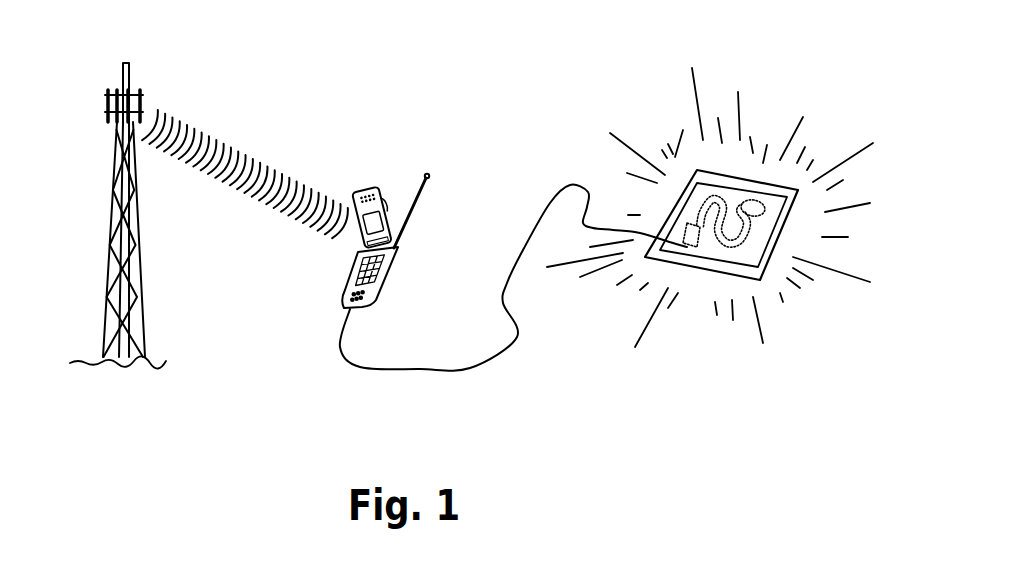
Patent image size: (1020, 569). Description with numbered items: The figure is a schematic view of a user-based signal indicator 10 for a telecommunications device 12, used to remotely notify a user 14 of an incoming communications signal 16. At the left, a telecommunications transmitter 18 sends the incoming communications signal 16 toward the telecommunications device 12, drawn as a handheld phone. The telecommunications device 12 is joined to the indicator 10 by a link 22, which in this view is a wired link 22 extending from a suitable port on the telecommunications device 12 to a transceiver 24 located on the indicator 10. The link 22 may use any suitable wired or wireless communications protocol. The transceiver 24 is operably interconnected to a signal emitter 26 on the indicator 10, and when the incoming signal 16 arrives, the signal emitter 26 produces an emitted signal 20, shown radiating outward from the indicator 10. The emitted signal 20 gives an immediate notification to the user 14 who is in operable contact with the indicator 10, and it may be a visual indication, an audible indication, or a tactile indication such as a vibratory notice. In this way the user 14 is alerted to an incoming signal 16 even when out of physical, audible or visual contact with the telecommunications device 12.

The user-based signal indicator 10 is at (666, 208).
The telecommunications device 12 is at (370, 188).
The user 14 is at (870, 350).
The incoming communications signal 16 is at (221, 142).
The telecommunications transmitter 18 is at (112, 172).
The emitted signal 20 is at (678, 74).
The link 22 is at (421, 362).
The transceiver 24 is at (692, 246).
The signal emitter 26 is at (758, 203).